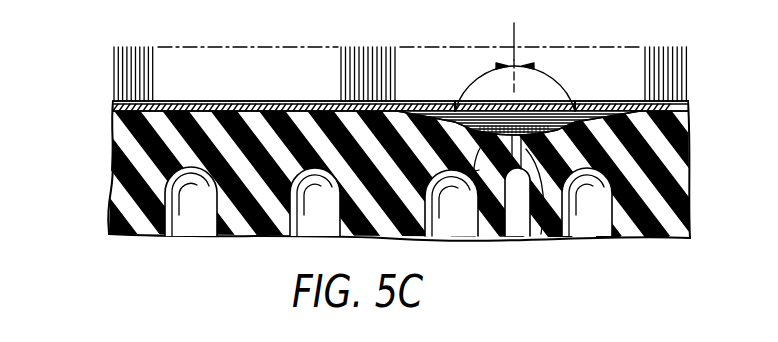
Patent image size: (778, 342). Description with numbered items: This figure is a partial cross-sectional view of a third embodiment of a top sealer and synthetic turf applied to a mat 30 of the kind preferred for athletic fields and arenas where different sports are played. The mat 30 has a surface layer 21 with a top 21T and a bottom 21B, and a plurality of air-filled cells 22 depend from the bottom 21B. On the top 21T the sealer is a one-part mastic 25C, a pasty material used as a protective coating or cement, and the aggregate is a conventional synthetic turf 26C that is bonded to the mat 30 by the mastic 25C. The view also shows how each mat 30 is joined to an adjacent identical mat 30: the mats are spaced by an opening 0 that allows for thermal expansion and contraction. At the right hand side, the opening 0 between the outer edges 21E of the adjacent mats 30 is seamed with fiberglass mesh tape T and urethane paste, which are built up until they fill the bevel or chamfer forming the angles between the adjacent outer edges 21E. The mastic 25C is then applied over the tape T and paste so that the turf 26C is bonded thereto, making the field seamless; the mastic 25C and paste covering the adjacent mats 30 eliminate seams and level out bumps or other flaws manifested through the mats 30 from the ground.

The surface layer 21 is at (113, 181).
The top of the surface layer 21T is at (167, 143).
The bottom of the surface layer 21B is at (193, 172).
The outer edges 21E is at (440, 128).
The air-filled cells 22 is at (186, 219).
The mastic 25C is at (113, 102).
The synthetic turf 26C is at (113, 72).
The mat 30 is at (122, 242).
The fiberglass mesh tape T is at (554, 133).
The opening 0 is at (541, 236).